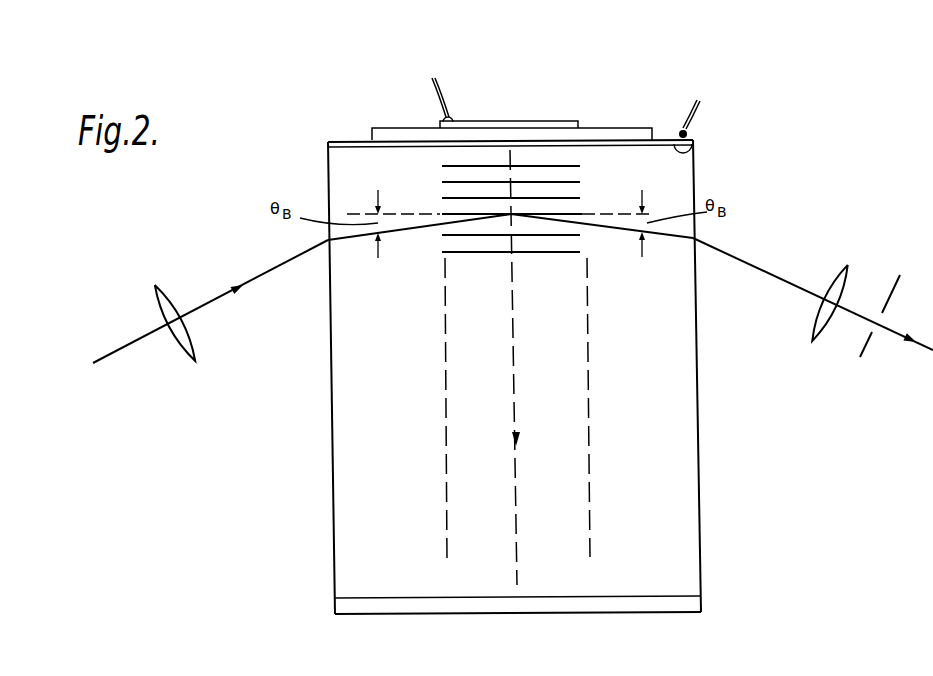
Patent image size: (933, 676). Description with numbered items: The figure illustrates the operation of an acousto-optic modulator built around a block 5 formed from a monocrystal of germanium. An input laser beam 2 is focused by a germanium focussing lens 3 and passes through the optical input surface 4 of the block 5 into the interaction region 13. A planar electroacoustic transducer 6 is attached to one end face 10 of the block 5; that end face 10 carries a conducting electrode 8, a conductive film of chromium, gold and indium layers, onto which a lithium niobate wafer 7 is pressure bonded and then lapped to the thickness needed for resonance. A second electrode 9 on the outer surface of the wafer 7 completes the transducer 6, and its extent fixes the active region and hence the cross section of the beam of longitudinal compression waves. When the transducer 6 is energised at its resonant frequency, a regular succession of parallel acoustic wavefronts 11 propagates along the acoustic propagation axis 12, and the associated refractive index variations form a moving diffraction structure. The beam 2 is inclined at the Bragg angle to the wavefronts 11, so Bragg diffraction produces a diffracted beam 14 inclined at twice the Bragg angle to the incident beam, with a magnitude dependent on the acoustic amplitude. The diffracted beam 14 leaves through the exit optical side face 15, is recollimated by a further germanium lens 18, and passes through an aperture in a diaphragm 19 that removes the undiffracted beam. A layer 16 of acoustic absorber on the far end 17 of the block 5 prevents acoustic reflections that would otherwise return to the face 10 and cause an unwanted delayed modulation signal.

The input laser beam 2 is at (130, 348).
The focussing lens 3 is at (153, 297).
The optical input surface 4 is at (328, 420).
The block 5 is at (384, 557).
The electroacoustic transducer 6 is at (408, 100).
The wafer 7 is at (610, 127).
The conducting electrode 8 is at (337, 140).
The second electrode 9 is at (520, 122).
The end face 10 is at (695, 147).
The acoustic wavefronts 11 is at (583, 251).
The acoustic propagation axis 12 is at (517, 450).
The interaction region 13 is at (507, 222).
The diffracted beam 14 is at (678, 240).
The exit optical side face 15 is at (690, 387).
The layer of acoustic absorber 16 is at (640, 603).
The far end 17 is at (668, 595).
The germanium lens 18 is at (842, 268).
The diaphragm 19 is at (860, 360).